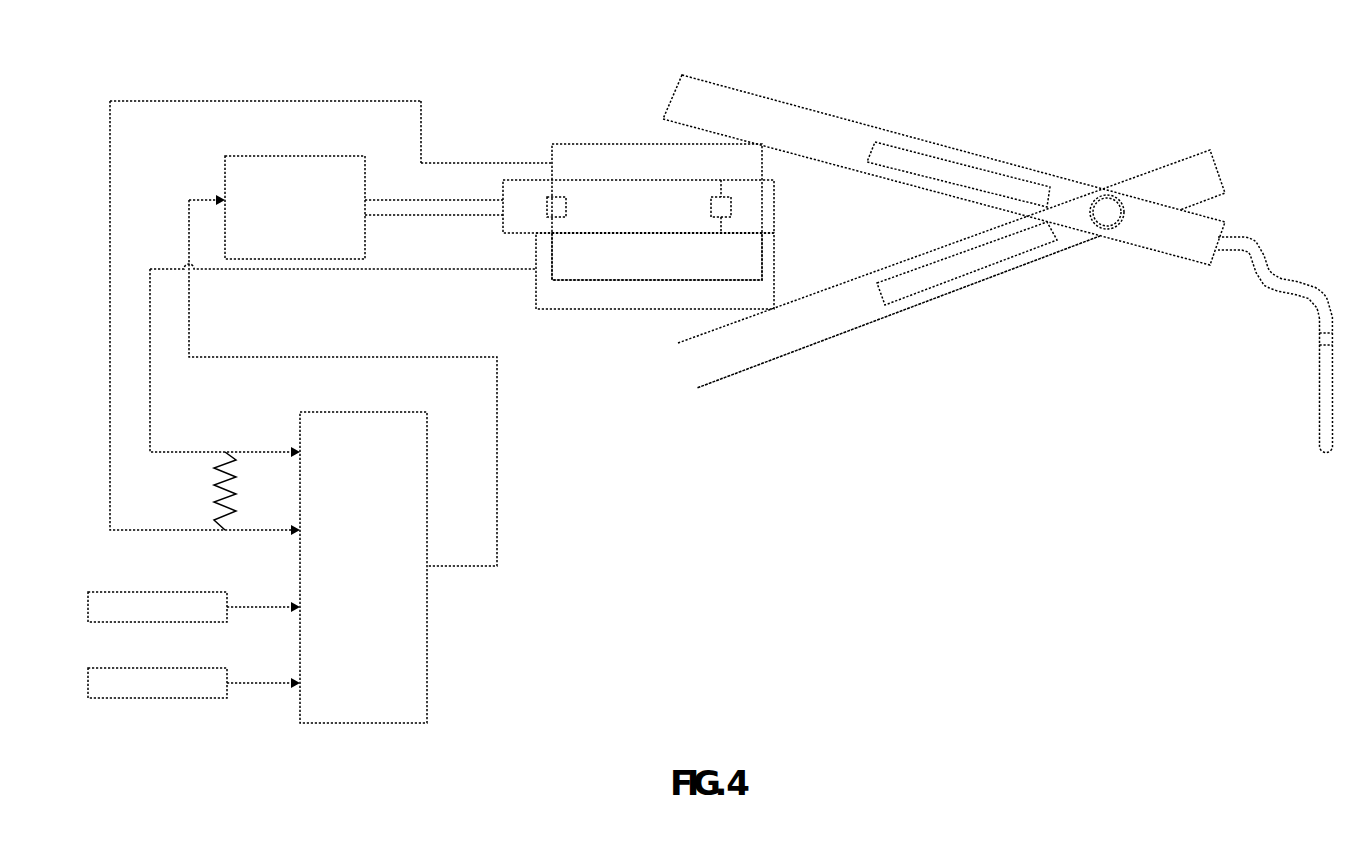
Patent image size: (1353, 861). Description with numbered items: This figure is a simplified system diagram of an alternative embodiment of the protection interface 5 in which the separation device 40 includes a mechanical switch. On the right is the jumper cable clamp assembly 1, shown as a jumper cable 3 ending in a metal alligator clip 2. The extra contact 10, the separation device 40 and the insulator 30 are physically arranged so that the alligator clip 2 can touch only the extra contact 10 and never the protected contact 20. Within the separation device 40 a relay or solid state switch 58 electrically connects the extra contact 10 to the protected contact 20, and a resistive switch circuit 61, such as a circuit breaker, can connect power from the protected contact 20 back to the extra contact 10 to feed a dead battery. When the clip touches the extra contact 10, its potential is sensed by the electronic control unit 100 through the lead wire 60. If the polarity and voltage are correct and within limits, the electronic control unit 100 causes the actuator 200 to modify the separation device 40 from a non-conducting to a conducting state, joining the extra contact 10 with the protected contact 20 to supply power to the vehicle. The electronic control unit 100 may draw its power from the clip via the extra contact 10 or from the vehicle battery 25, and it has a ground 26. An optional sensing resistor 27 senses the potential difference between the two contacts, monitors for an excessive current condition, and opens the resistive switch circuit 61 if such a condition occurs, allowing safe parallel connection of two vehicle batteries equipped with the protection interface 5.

The hair iron 1 is at (987, 237).
The alligator clip 2 is at (1009, 150).
The jumper cable 3 is at (1300, 282).
The protection interface 5 is at (632, 70).
The extra contact 10 is at (604, 144).
The protected contact 20 is at (768, 250).
The insulator 30 is at (592, 313).
The separation device 40 is at (500, 223).
The relay or solid state switch 58 is at (549, 197).
The resistive switch circuit 61 is at (731, 210).
The lead wire 60 is at (165, 101).
The electronic control unit 100 is at (370, 412).
The actuator 200 is at (292, 157).
The vehicle battery 25 is at (148, 591).
The ground 26 is at (148, 667).
The sensing resistor 27 is at (200, 480).